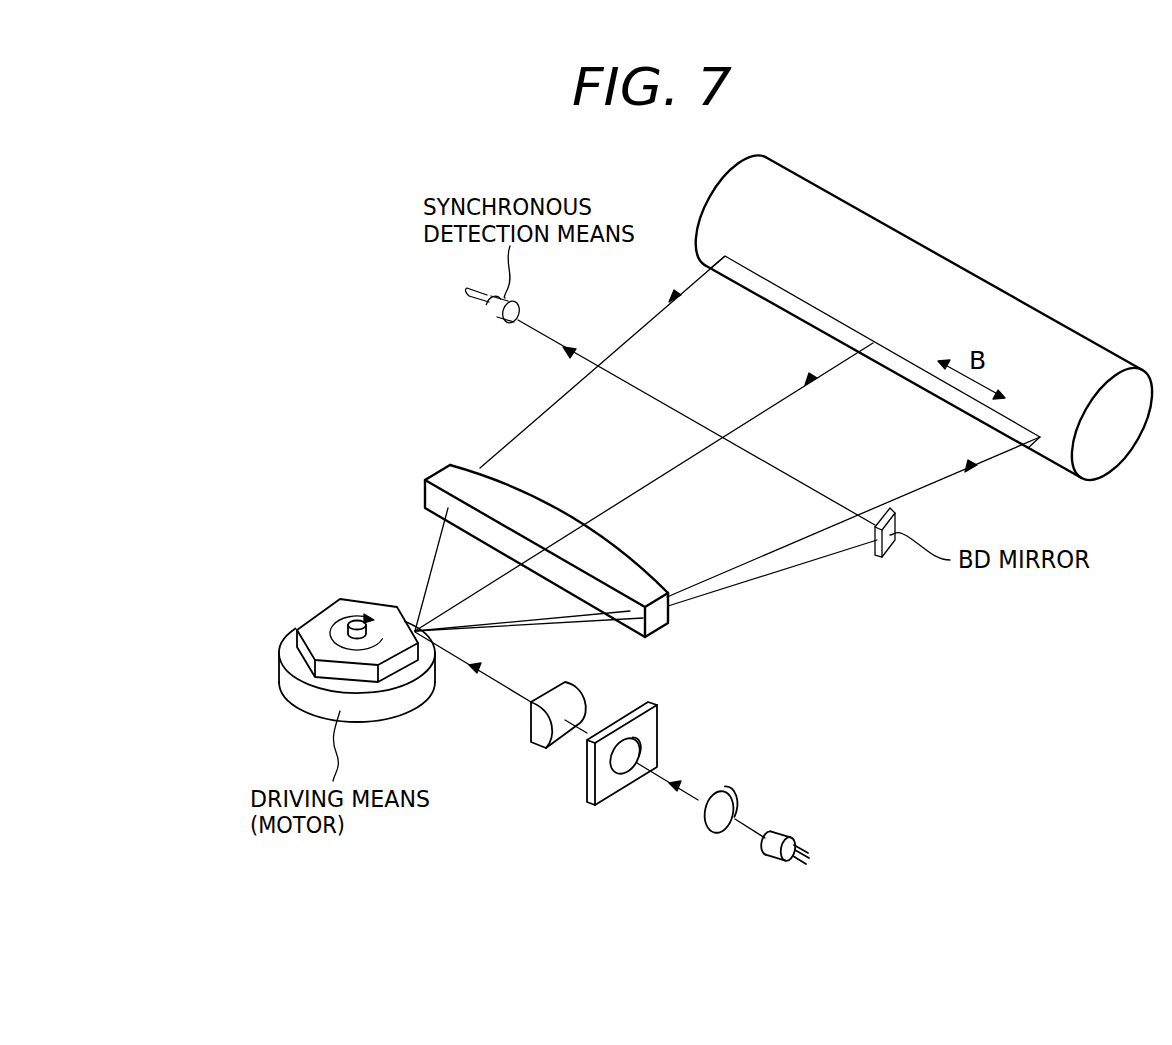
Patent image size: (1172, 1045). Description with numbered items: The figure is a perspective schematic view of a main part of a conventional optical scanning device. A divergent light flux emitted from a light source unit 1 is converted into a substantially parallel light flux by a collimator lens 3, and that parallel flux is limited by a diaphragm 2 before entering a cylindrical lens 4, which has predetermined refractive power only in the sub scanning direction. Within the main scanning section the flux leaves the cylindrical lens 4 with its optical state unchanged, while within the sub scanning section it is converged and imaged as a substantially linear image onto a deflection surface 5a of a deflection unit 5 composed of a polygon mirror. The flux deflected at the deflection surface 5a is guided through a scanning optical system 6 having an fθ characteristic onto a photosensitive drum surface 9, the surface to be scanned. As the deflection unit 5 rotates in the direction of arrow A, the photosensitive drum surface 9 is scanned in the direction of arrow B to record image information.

The light source unit 1 is at (767, 853).
The diaphragm 2 is at (600, 765).
The collimator lens 3 is at (708, 820).
The cylindrical lens 4 is at (538, 720).
The deflection unit 5 is at (322, 618).
The deflection surface 5a is at (331, 672).
The scanning optical system 6 is at (441, 474).
The photosensitive drum surface 9 is at (921, 252).